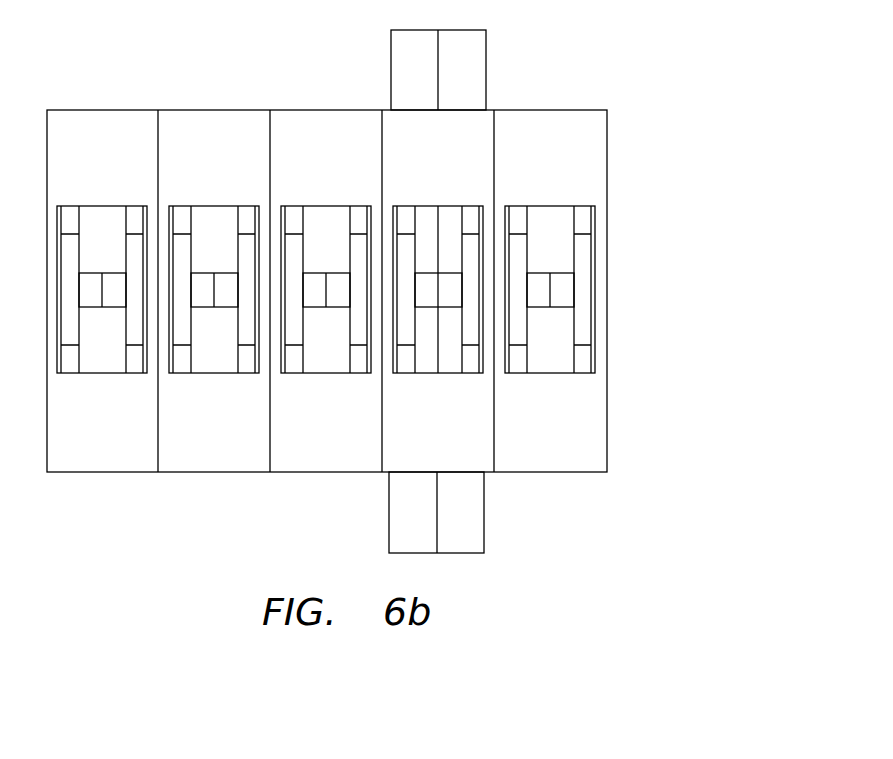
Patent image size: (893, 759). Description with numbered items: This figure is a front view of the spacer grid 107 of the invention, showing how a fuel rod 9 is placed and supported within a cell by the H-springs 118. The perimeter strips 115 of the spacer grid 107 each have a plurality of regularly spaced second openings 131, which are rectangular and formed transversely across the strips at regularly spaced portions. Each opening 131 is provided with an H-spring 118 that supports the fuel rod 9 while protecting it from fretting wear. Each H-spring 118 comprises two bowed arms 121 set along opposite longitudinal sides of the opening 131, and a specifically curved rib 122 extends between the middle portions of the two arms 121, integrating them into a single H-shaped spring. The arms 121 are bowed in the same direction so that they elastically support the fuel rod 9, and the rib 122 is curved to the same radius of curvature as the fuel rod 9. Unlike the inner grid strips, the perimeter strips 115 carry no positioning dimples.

The fuel rod 9 is at (478, 58).
The spacer grid 107 is at (407, 307).
The perimeter strip 115 is at (327, 462).
The H-spring 118 is at (636, 259).
The bowed arm 121 is at (582, 253).
The curved rib 122 is at (605, 297).
The second opening 131 is at (545, 222).